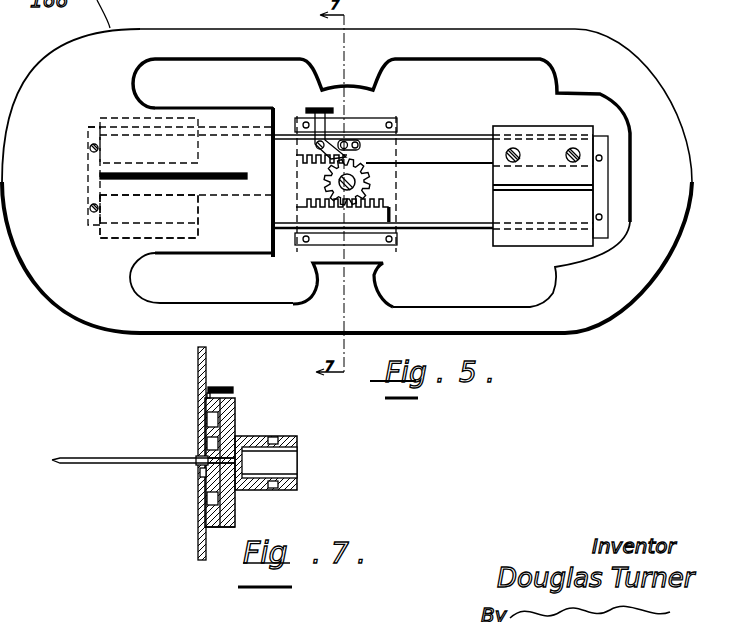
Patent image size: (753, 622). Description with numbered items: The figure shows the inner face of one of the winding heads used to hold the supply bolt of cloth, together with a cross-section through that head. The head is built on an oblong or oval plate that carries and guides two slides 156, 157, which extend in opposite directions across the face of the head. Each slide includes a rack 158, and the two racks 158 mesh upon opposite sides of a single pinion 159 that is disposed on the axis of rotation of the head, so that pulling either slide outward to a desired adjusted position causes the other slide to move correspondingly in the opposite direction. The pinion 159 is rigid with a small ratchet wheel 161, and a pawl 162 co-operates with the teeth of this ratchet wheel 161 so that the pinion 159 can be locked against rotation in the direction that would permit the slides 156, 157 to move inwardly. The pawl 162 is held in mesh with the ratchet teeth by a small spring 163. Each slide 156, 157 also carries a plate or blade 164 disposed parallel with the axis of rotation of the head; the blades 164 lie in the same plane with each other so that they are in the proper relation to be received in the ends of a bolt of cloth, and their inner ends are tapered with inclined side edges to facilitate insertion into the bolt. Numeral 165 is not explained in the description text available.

In FIG. 5, the slide 156 is at (453, 120).
In FIG. 7, the slide 156 is at (236, 416).
In FIG. 5, the slide 157 is at (456, 216).
In FIG. 7, the slide 157 is at (235, 505).
In FIG. 5, the rack 158 is at (368, 165).
In FIG. 5, the pinion 159 is at (341, 192).
In FIG. 7, the pinion 159 is at (257, 430).
In FIG. 5, the ratchet wheel 161 is at (305, 166).
In FIG. 7, the ratchet wheel 161 is at (200, 481).
In FIG. 5, the pawl 162 is at (308, 115).
In FIG. 7, the pawl 162 is at (223, 387).
In FIG. 5, the spring 163 is at (345, 149).
In FIG. 5, the blade 164 is at (135, 180).
In FIG. 7, the blade 164 is at (125, 430).
In FIG. 5, the slide bar 165 is at (100, 175).